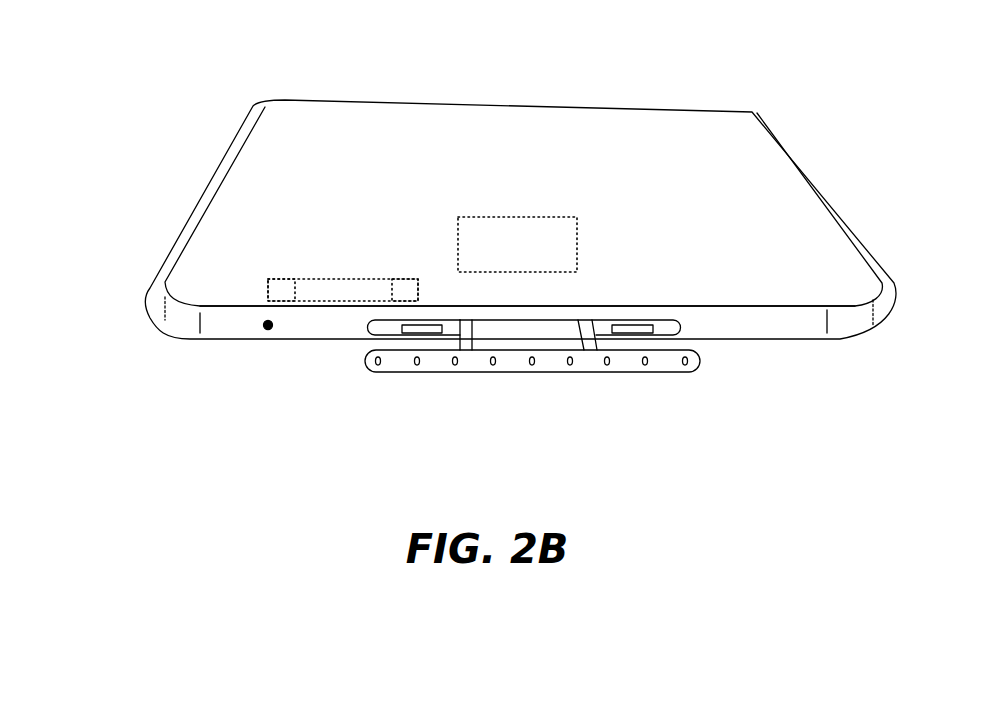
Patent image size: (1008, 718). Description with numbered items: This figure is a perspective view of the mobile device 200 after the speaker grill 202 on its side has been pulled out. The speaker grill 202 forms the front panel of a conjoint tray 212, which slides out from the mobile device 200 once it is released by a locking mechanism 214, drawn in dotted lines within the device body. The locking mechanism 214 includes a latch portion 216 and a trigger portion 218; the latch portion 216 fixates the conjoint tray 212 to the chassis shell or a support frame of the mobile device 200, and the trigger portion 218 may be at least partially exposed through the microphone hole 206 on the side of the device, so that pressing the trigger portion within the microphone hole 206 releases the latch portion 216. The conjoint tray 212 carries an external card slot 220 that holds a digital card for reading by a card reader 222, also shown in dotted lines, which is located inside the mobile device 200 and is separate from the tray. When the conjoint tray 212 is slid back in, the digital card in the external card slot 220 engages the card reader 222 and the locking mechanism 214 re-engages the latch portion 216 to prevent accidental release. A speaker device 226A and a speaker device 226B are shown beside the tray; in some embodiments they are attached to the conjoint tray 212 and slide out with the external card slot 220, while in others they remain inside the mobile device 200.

The mobile device 200 is at (115, 70).
The speaker grill 202 is at (395, 365).
The microphone hole 206 is at (264, 331).
The conjoint tray 212 is at (455, 373).
The locking mechanism 214 is at (330, 299).
The latch portion 216 is at (403, 293).
The trigger portion 218 is at (281, 293).
The external card slot 220 is at (537, 337).
The card reader 222 is at (522, 217).
The speaker device 226A is at (422, 330).
The speaker device 226B is at (622, 333).